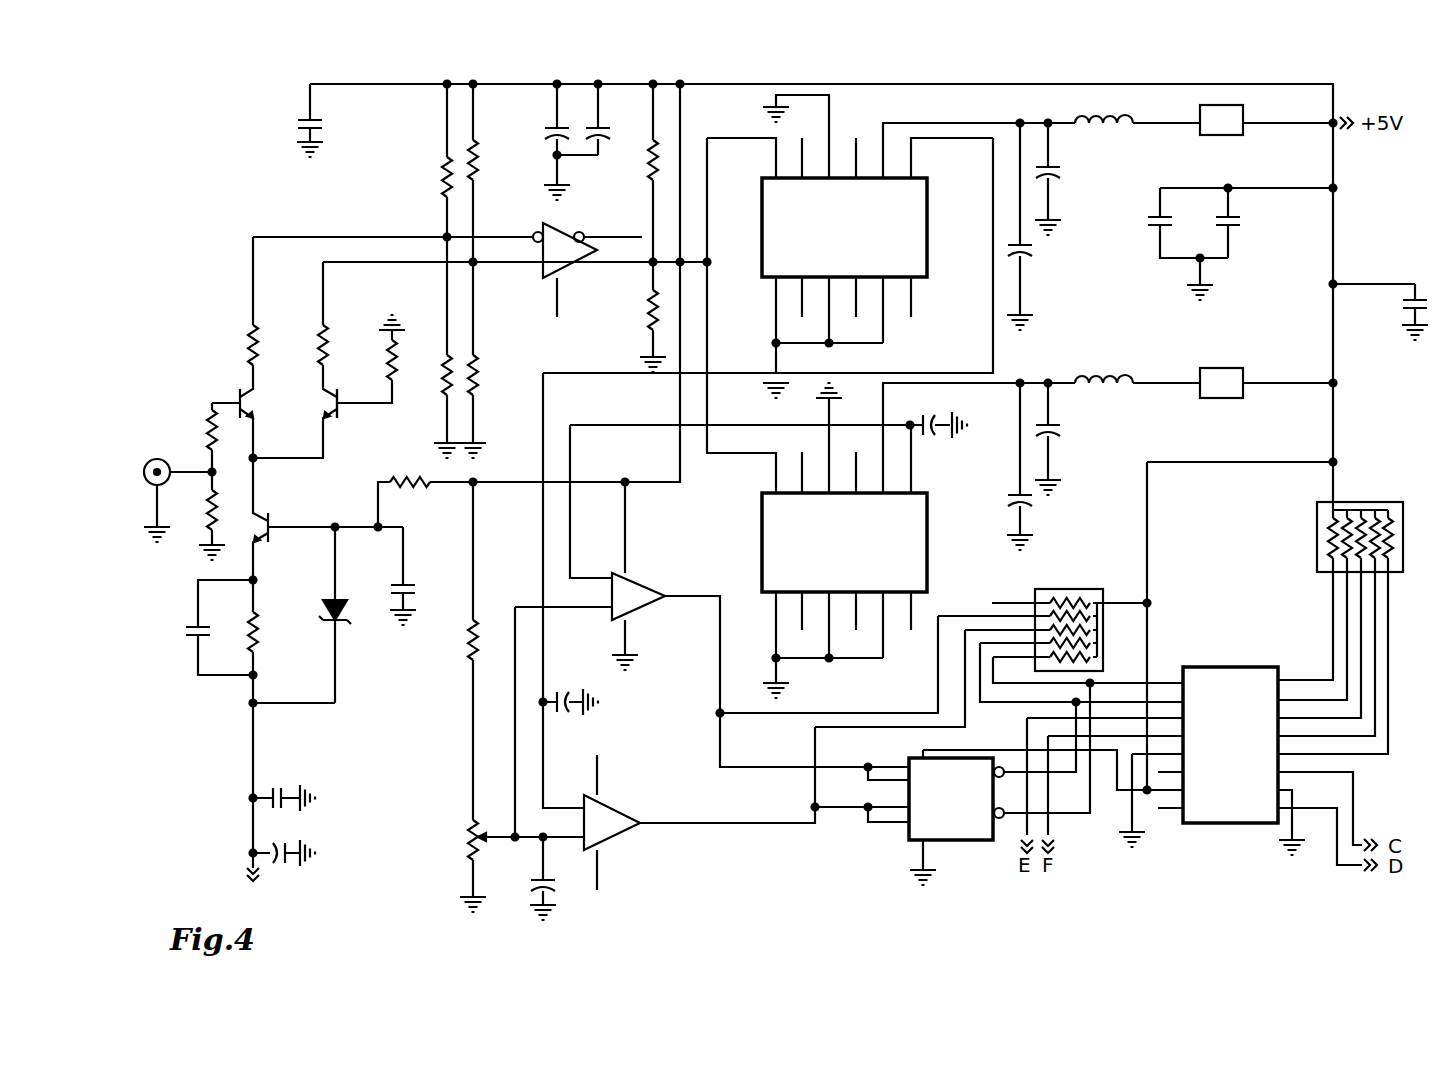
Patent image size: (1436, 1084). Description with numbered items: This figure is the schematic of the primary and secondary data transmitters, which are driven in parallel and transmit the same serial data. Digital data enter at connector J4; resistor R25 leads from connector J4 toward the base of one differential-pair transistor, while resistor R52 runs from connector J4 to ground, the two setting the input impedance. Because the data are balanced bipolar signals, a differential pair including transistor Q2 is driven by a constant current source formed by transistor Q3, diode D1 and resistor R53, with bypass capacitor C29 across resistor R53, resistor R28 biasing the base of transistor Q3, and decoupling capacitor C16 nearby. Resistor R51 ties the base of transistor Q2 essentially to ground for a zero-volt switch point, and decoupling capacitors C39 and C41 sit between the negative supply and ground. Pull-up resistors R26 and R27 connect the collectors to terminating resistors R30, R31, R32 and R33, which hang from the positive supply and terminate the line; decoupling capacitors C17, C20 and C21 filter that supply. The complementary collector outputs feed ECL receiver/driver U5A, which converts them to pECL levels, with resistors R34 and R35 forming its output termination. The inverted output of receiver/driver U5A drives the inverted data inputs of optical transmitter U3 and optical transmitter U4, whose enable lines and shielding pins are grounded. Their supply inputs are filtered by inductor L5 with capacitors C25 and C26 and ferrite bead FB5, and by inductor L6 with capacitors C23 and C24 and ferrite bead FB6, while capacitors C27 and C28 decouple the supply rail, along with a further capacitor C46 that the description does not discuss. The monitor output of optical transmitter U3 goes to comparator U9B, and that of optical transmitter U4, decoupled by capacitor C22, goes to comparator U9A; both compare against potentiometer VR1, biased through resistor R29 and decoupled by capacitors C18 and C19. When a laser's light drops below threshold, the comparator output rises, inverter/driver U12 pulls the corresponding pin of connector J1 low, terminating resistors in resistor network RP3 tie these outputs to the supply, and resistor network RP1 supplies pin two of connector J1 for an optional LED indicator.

The decoupling capacitor C17 is at (329, 120).
The terminating resistor R32 is at (428, 177).
The terminating resistor R33 is at (495, 167).
The terminating resistor R30 is at (433, 406).
The terminating resistor R31 is at (491, 406).
The decoupling capacitor C20 is at (549, 142).
The decoupling capacitor C21 is at (619, 119).
The termination network resistor R35 is at (635, 173).
The termination network resistor R34 is at (639, 317).
The receiver/driver U5A is at (587, 255).
The optical transmitter U3 is at (877, 246).
The decoupling capacitor C26 is at (1068, 179).
The decoupling capacitor C25 is at (1041, 226).
The inductor L5 is at (1104, 134).
The ferrite bead FB5 is at (1221, 120).
The decoupling capacitor C27 is at (1168, 244).
The decoupling capacitor C28 is at (1249, 222).
The capacitor C46 is at (1397, 312).
The inductor L6 is at (1104, 363).
The ferrite bead FB6 is at (1221, 368).
The decoupling capacitor C24 is at (1068, 439).
The decoupling capacitor C23 is at (1041, 466).
The decoupling capacitor C22 is at (938, 434).
The optical transmitter U4 is at (862, 540).
The pull-up resistor R26 is at (270, 317).
The pull-up resistor R27 is at (344, 329).
The resistor R51 is at (371, 359).
The transistor Q3 is at (307, 486).
The transistor Q2 is at (352, 415).
The resistor R25 is at (196, 426).
The resistor R52 is at (228, 519).
The connector J4 is at (173, 476).
The resistor R28 is at (529, 502).
The decoupling capacitor C16 is at (424, 576).
The diode D1 is at (353, 615).
The resistor R53 is at (284, 743).
The bypass capacitor C29 is at (205, 627).
The decoupling capacitor C39 is at (298, 788).
The decoupling capacitor C41 is at (302, 842).
The resistor R29 is at (454, 640).
The potentiometer VR1 is at (458, 862).
The decoupling capacitor C18 is at (569, 692).
The decoupling capacitor C19 is at (564, 878).
The comparator U9A is at (650, 573).
The comparator U9B is at (625, 822).
The inverter/driver U12 is at (956, 817).
The resistor network RP3 is at (1042, 616).
The connector J1 is at (1135, 733).
The resistor network RP1 is at (1337, 527).